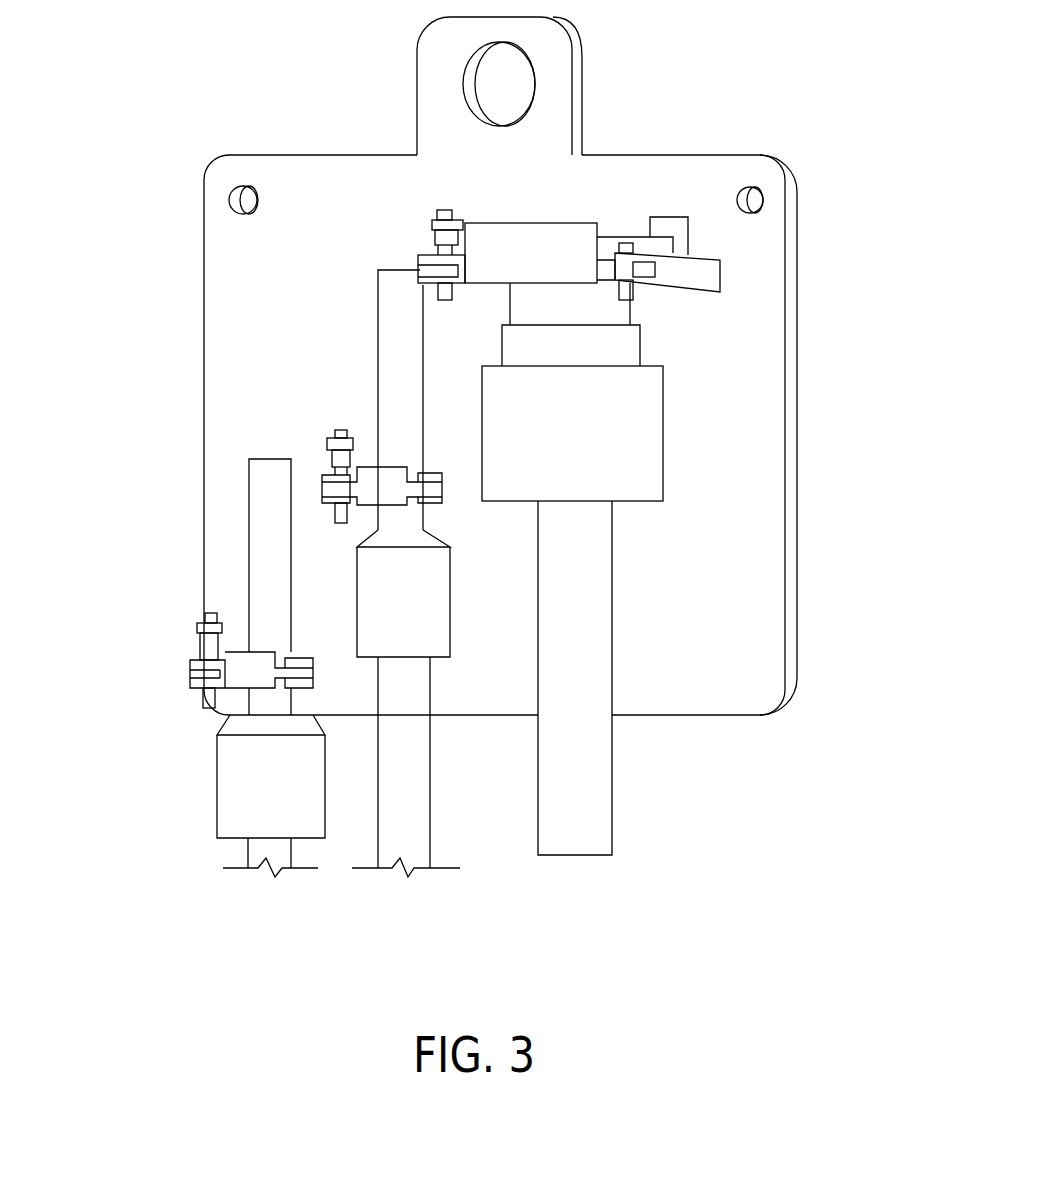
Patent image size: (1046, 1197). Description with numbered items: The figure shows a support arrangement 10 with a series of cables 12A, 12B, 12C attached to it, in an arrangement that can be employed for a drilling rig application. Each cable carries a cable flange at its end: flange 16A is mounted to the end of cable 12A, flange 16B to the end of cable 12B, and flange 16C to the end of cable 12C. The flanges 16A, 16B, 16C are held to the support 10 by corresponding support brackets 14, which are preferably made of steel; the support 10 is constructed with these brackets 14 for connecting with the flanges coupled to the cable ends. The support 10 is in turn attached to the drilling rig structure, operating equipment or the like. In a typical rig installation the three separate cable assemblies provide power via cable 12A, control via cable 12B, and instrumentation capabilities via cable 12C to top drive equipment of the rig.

The support arrangement 10 is at (552, 128).
The cable 12A is at (583, 766).
The cable 12B is at (385, 289).
The cable 12C is at (258, 525).
The support bracket 14 is at (510, 263).
The cable flange 16A is at (637, 386).
The cable flange 16B is at (405, 629).
The cable flange 16C is at (290, 772).